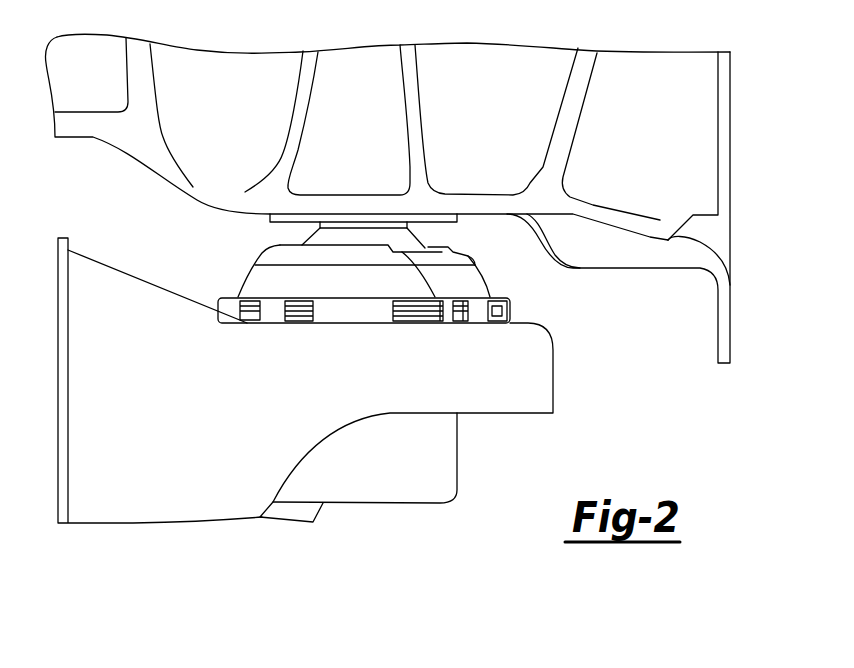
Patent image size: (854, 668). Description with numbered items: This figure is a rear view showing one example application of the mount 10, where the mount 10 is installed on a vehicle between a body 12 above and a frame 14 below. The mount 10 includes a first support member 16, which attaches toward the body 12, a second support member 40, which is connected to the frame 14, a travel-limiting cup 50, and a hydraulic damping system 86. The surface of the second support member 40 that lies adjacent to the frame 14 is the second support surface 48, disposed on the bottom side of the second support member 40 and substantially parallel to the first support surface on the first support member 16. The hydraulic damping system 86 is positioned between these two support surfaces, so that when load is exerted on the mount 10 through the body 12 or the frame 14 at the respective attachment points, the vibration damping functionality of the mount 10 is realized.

The mount 10 is at (153, 233).
The body 12 is at (683, 141).
The frame 14 is at (183, 492).
The first support member 16 is at (275, 218).
The second support member 40 is at (500, 313).
The second support surface 48 is at (410, 320).
The travel-limiting cup 50 is at (445, 442).
The damping system 86 is at (541, 298).